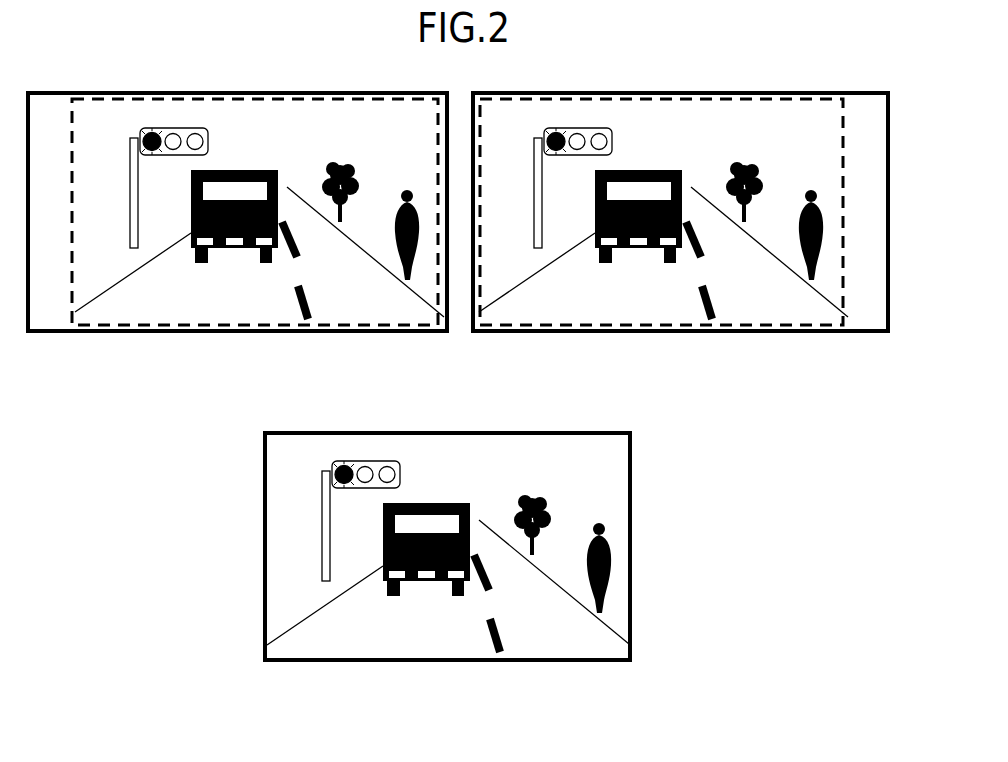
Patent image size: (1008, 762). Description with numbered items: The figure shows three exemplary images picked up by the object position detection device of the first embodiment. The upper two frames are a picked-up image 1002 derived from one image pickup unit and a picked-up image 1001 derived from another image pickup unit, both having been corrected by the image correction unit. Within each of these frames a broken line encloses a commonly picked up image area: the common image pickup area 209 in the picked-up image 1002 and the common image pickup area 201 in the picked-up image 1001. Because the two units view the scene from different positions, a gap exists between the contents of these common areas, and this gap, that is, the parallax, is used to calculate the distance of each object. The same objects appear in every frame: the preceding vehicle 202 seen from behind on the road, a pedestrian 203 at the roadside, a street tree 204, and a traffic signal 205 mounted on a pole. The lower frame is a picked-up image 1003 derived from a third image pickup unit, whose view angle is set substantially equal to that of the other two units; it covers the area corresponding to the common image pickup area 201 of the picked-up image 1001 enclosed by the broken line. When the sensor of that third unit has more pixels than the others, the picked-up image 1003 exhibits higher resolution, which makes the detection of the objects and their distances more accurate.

The picked-up image 1001 is at (682, 189).
The picked-up image 1002 is at (237, 192).
The picked-up image 1003 is at (463, 521).
The common image pickup area 201 is at (688, 212).
The common image pickup area 209 is at (232, 212).
The preceding vehicle 202 is at (453, 357).
The pedestrian 203 is at (611, 376).
The street tree 204 is at (550, 334).
The traffic signal 205 is at (377, 337).